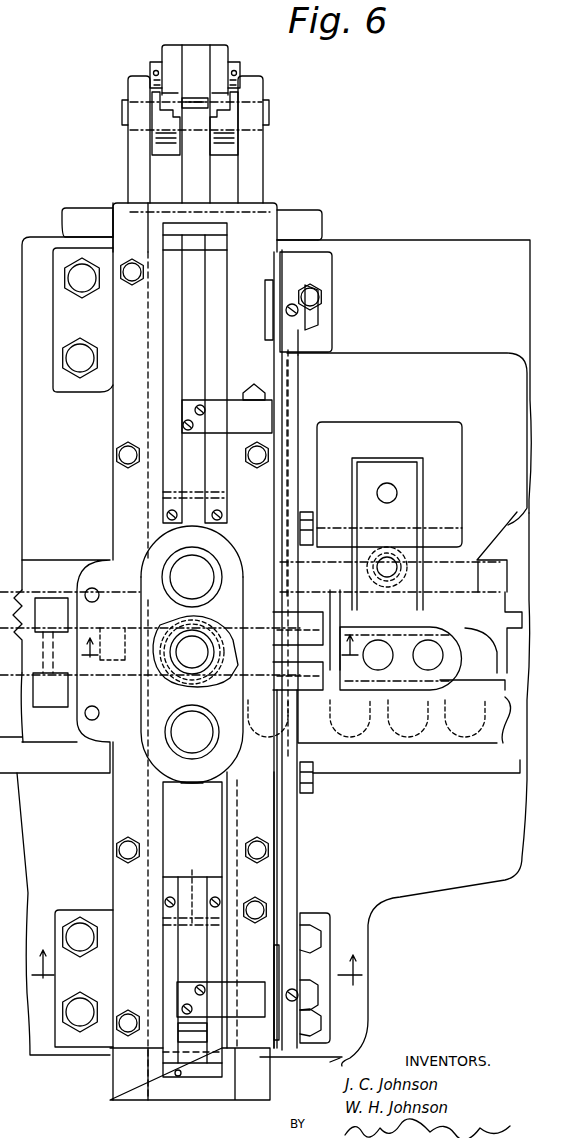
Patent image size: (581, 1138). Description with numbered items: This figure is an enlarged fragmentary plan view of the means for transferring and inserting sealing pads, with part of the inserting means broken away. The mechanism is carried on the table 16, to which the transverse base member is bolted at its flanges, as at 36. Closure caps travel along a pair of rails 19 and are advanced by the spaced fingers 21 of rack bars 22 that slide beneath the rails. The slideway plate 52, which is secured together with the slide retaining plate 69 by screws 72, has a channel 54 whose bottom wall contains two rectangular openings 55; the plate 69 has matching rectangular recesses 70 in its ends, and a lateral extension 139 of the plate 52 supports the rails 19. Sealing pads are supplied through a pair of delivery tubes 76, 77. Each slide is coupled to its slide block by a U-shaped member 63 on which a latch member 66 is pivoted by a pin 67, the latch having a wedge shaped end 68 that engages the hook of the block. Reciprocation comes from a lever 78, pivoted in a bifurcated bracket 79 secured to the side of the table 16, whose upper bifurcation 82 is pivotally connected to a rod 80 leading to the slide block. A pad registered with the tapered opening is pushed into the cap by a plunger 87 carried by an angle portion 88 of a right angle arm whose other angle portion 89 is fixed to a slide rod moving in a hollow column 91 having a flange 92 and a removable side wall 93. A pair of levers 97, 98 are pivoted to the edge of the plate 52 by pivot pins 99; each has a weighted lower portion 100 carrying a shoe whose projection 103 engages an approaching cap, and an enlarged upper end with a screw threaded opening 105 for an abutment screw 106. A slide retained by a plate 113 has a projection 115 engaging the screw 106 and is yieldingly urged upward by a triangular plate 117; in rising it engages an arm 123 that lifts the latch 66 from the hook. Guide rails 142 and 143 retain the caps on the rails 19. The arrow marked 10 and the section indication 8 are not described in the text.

The bifurcation 82 is at (223, 45).
The rod 80 is at (200, 175).
The lever 78 is at (232, 118).
The bifurcated bracket 79 is at (255, 146).
The channel 54 is at (215, 220).
The table 16 is at (468, 240).
The U-shaped member 63 is at (163, 415).
The latch member 66 is at (193, 472).
The wedge shaped end 68 is at (185, 400).
The screws 72 is at (116, 455).
The pin 67 is at (193, 870).
The bolts 36 is at (70, 358).
The plate 113 is at (278, 275).
The screw threaded opening 105 is at (300, 281).
The projection 115 is at (300, 310).
The abutment screw 106 is at (300, 320).
The flange 92 is at (460, 355).
The lever 98 is at (292, 380).
The lever 97 is at (300, 832).
The arm 123 is at (296, 415).
The hollow column 91 is at (462, 437).
The removable side wall 93 is at (435, 525).
The angle portion 89 is at (405, 575).
The pivot pin 99 is at (310, 512).
The rails 19 is at (492, 560).
The rack bars 22 is at (509, 608).
The fingers 21 is at (22, 560).
The delivery tube 77 is at (178, 562).
The delivery tube 76 is at (175, 750).
The angle portion 88 is at (172, 668).
The plunger 87 is at (182, 640).
The shoe projection 103 is at (195, 647).
The lateral extension 139 is at (95, 587).
The guide rail 143 is at (65, 710).
The guide rail 142 is at (48, 598).
The weighted portion 100 is at (315, 612).
The direction arrow 10 is at (227, 643).
The rectangular recesses 70 is at (165, 820).
The slide retaining plate 69 is at (113, 812).
The rectangular openings 55 is at (176, 1078).
The slideway plate 52 is at (113, 1095).
The section line 8 is at (197, 957).
The triangular plate 117 is at (345, 1062).